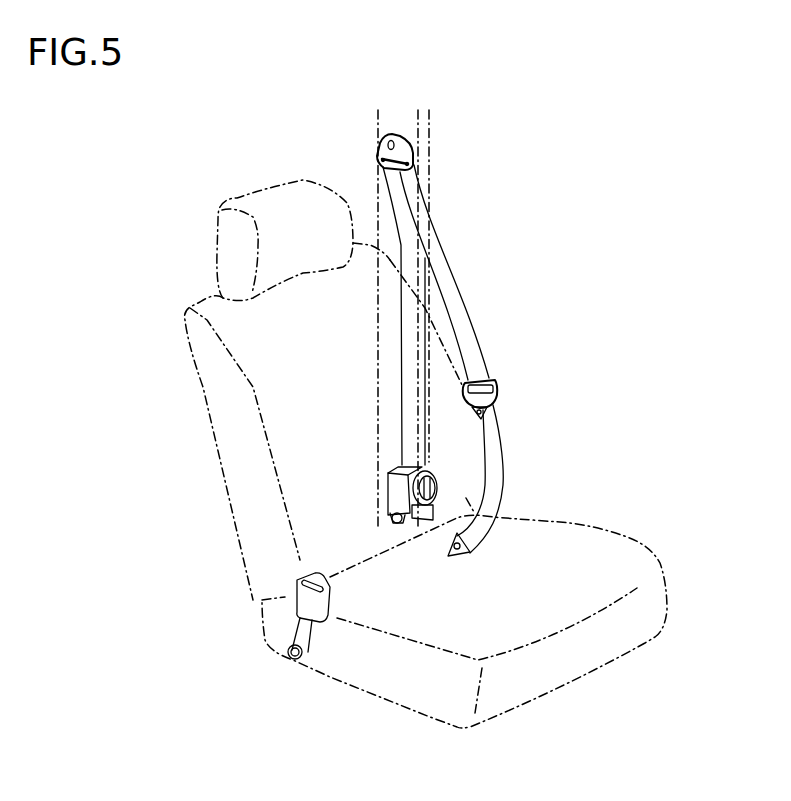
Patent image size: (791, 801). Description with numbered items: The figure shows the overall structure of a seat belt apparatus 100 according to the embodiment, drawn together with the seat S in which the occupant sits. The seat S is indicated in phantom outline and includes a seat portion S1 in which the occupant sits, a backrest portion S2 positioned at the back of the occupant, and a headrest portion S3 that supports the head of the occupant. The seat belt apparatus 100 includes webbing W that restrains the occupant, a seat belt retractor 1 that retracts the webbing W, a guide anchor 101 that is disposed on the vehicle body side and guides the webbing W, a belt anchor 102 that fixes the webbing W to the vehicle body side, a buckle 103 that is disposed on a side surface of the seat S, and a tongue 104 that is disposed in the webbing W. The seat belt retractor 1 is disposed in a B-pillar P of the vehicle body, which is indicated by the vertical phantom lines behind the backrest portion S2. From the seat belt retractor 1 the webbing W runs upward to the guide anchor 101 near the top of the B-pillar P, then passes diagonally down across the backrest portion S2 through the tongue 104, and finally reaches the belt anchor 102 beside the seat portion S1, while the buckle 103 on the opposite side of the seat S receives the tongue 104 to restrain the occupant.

The seat belt apparatus 100 is at (500, 328).
The seat belt retractor 1 is at (387, 489).
The guide anchor 101 is at (376, 150).
The belt anchor 102 is at (463, 557).
The buckle 103 is at (297, 592).
The tongue 104 is at (498, 393).
The webbing W is at (448, 278).
The B-pillar P is at (431, 124).
The seat S is at (163, 275).
The seat portion S1 is at (598, 568).
The backrest portion S2 is at (311, 351).
The headrest portion S3 is at (311, 236).